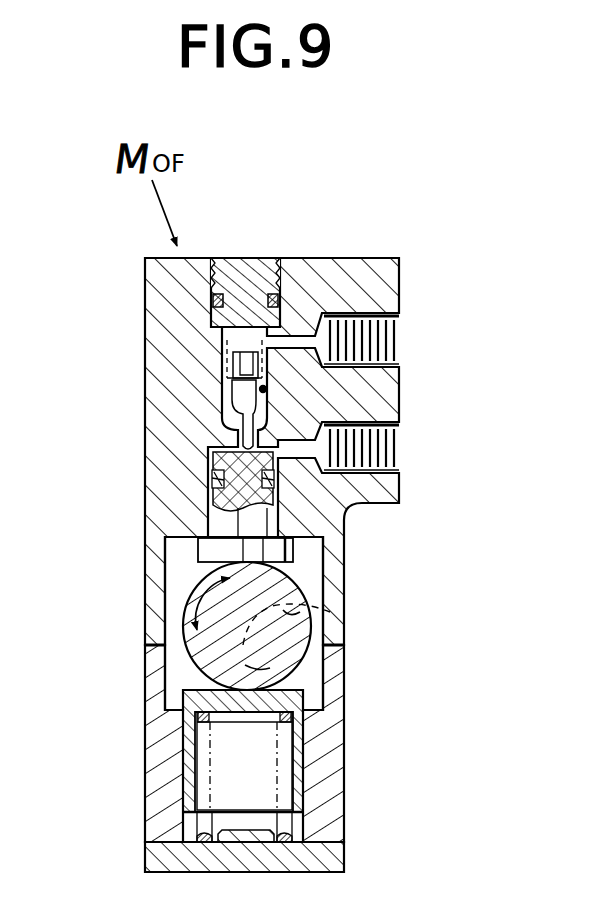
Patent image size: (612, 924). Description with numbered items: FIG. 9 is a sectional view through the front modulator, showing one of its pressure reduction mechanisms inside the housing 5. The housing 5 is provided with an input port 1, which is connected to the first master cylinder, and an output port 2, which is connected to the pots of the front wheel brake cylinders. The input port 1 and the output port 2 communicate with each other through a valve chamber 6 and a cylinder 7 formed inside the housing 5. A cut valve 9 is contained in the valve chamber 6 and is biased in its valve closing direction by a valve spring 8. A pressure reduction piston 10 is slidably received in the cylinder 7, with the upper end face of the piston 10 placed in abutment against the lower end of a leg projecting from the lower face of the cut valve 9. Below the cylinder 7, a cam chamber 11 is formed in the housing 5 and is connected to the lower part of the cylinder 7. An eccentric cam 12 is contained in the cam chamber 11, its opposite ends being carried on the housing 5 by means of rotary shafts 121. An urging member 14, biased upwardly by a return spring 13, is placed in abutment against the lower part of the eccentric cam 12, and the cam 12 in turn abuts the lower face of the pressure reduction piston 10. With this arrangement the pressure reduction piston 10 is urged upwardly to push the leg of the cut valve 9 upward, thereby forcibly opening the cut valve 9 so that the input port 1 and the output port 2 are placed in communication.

The input port 1 is at (393, 358).
The output port 2 is at (387, 472).
The housing 5 is at (152, 461).
The valve chamber 6 is at (263, 390).
The cylinder 7 is at (268, 518).
The valve spring 8 is at (220, 328).
The cut valve 9 is at (240, 402).
The pressure reduction piston 10 is at (222, 518).
The cam chamber 11 is at (172, 571).
The eccentric cam 12 is at (205, 650).
The rotary shaft 121 is at (330, 612).
The return spring 13 is at (207, 722).
The urging member 14 is at (150, 755).